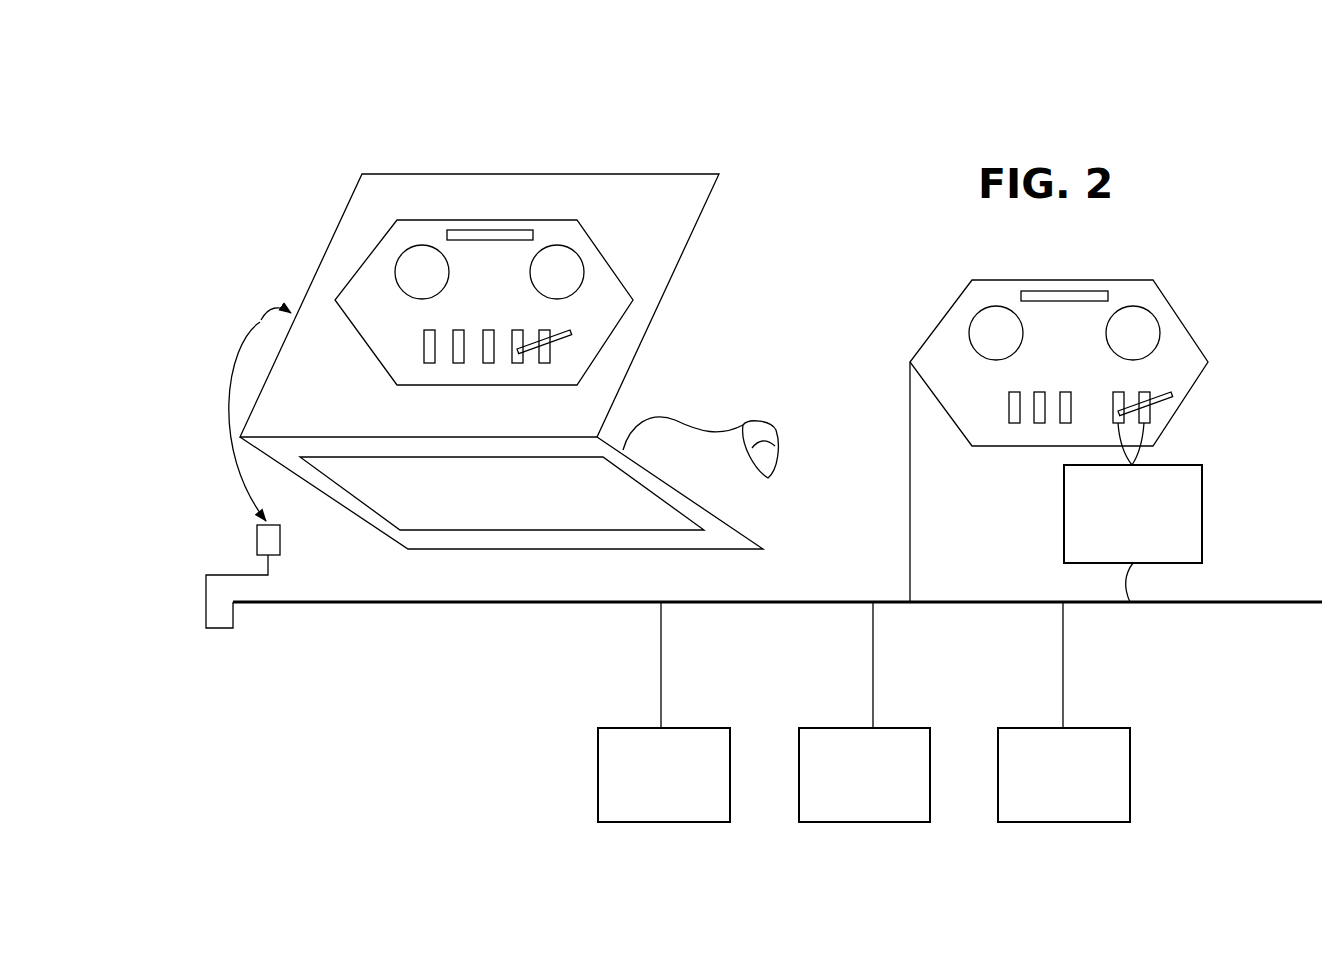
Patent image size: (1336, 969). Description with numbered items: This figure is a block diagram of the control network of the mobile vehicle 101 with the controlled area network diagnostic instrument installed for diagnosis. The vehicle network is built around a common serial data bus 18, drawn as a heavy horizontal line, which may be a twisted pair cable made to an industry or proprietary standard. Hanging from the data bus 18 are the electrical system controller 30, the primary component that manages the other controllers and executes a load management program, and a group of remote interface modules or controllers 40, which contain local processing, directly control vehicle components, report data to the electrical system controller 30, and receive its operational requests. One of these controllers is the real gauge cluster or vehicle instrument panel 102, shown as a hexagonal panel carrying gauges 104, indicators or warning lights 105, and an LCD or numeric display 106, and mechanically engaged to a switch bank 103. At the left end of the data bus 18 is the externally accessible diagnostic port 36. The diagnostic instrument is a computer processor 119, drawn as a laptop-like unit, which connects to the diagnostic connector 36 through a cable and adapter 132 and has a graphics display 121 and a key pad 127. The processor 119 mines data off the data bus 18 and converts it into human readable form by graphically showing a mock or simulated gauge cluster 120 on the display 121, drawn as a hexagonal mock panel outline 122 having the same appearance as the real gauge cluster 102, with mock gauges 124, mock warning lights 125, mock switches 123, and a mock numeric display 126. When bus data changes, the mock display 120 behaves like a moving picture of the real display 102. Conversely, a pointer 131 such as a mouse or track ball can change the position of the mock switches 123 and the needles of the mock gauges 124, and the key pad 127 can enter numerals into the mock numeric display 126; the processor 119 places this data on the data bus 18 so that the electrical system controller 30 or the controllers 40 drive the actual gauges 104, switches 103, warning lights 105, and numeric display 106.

The serial data bus 18 is at (487, 605).
The electrical system controller 30 is at (1133, 514).
The diagnostic port 36 is at (284, 545).
The controllers 40 is at (864, 775).
The mobile vehicle 101 is at (777, 545).
The gauge cluster 102 is at (1085, 360).
The switch bank 103 is at (1160, 416).
The gauges 104 is at (968, 316).
The warning lights 105 is at (1014, 423).
The numeric displays 106 is at (1108, 288).
The computer processor 119 is at (544, 310).
The mock gauge cluster 120 is at (497, 228).
The graphics display 121 is at (680, 217).
The hexagonal control panel 122 is at (392, 219).
The mock switch 123 is at (556, 353).
The mock gauges 124 is at (425, 243).
The mock warning lights 125 is at (421, 346).
The mock numeric display 126 is at (504, 228).
The key pad 127 is at (679, 503).
The pointer 131 is at (773, 425).
The cable and adapter 132 is at (258, 318).